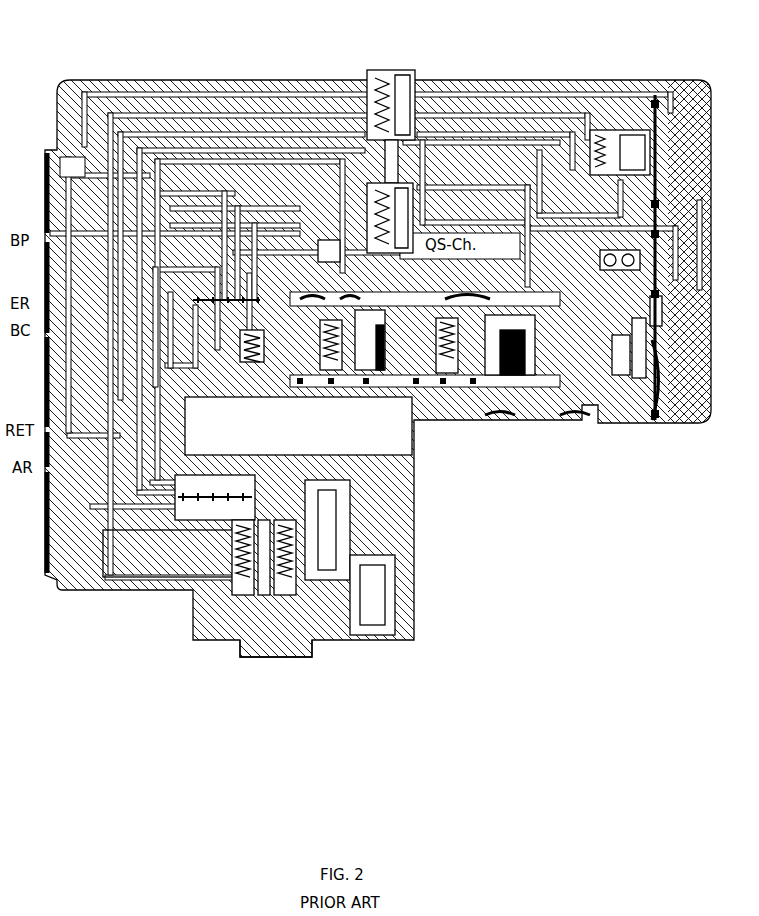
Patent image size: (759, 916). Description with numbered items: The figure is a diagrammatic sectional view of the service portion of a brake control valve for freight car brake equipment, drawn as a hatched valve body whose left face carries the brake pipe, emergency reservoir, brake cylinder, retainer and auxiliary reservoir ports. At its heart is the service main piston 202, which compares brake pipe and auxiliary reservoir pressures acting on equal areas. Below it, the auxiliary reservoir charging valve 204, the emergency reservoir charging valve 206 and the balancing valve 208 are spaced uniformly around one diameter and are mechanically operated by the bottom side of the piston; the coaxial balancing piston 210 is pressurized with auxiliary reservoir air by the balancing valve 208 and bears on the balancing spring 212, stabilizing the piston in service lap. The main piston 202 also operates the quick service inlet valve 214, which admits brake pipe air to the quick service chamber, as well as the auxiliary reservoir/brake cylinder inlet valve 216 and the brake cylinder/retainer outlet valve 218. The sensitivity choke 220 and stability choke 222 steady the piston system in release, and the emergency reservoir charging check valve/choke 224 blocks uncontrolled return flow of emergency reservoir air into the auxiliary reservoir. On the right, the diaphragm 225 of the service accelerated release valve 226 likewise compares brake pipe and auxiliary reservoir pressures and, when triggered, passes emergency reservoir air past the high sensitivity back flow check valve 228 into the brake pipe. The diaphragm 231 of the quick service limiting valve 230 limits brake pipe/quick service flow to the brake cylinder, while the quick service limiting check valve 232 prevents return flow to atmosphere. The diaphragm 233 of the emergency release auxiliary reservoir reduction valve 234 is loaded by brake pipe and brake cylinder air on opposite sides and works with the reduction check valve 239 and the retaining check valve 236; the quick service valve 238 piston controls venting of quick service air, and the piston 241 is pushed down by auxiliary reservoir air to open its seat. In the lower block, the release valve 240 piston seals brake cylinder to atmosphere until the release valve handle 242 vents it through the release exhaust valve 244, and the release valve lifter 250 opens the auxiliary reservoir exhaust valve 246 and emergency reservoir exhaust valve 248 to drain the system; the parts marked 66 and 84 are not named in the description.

The service main piston 202 is at (485, 205).
The auxiliary reservoir charging valve 204 is at (330, 400).
The emergency reservoir charging valve 206 is at (305, 390).
The balancing valve 208 is at (445, 370).
The balancing piston 210 is at (414, 395).
The balancing spring 212 is at (360, 393).
The quick service inlet valve 214 is at (381, 247).
The auxiliary reservoir/brake cylinder inlet valve 216 is at (412, 77).
The brake cylinder/retainer outlet valve 218 is at (383, 158).
The sensitivity choke 220 is at (207, 300).
The stability choke 222 is at (333, 255).
The emergency reservoir charging check valve/choke 224 is at (247, 380).
The metal reinforced rubber diaphragm 225 is at (652, 103).
The service accelerated release valve 226 is at (627, 117).
The high sensitivity back flow check valve 228 is at (585, 140).
The quick service limiting valve 230 is at (610, 245).
The metal reinforced rubber diaphragm 231 is at (656, 300).
The quick service limiting check valve 232 is at (593, 260).
The metal reinforced rubber diaphragm 233 is at (652, 420).
The emergency release auxiliary reservoir reduction valve 234 is at (602, 413).
The retaining check valve 236 is at (642, 322).
The quick service valve 238 is at (532, 420).
The emergency release auxiliary reservoir reduction check valve 239 is at (628, 340).
The release valve 240 is at (207, 550).
The piston 241 is at (520, 415).
The release valve handle 242 is at (273, 697).
The release exhaust valve 244 is at (238, 592).
The auxiliary reservoir exhaust valve 246 is at (303, 625).
The emergency reservoir exhaust valve 248 is at (243, 512).
The release valve lifter 250 is at (272, 507).
The valve 66 is at (355, 637).
The valve 84 is at (533, 335).